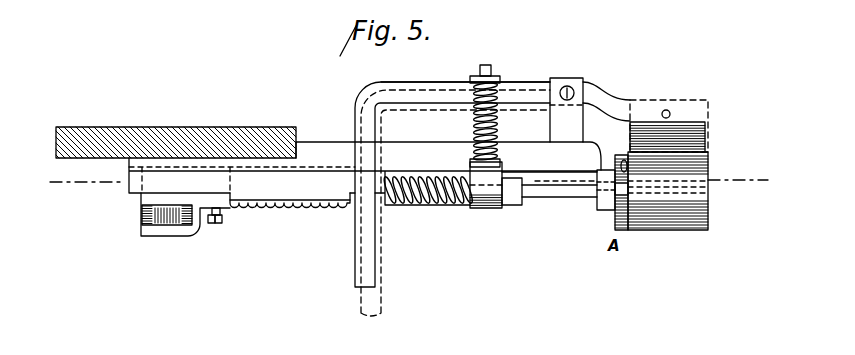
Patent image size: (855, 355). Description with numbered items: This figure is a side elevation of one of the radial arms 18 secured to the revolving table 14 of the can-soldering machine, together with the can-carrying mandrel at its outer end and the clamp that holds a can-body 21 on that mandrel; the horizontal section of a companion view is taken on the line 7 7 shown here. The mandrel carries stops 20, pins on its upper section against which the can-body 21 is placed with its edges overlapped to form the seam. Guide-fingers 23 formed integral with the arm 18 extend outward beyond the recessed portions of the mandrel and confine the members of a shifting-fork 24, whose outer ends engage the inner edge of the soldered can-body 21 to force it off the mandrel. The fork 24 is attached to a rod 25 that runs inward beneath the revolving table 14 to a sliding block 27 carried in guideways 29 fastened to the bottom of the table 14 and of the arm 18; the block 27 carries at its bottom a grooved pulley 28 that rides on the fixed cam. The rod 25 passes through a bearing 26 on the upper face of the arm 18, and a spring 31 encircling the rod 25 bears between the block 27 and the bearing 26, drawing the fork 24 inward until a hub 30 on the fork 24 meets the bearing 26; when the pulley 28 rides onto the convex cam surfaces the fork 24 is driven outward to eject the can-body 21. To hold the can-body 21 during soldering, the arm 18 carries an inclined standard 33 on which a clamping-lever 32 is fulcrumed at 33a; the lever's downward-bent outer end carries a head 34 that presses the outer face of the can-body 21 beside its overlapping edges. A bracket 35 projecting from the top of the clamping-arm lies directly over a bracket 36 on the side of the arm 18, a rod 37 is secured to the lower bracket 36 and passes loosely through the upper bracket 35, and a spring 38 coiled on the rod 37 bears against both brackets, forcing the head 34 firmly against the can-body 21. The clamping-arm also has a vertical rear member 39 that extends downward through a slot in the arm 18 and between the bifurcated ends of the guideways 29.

The section line 7 7 is at (407, 182).
The revolving table 14 is at (176, 134).
The arm 18 is at (428, 176).
The stops 20 is at (625, 158).
The can-body 21 is at (708, 206).
The guide-fingers 23 is at (606, 210).
The shifting-fork 24 is at (628, 188).
The rod 25 is at (548, 190).
The bearing 26 is at (502, 180).
The sliding block 27 is at (224, 199).
The pulley 28 is at (148, 213).
The guideways 29 is at (330, 171).
The hub 30 is at (517, 206).
The spring 31 is at (333, 210).
The clamping-lever 32 is at (519, 88).
The standard 33 is at (552, 118).
The fulcrum 33a is at (571, 90).
The head 34 is at (700, 134).
The bracket 35 is at (479, 77).
The bracket 36 is at (472, 162).
The rod 37 is at (489, 70).
The spring 38 is at (474, 126).
The vertical rear member 39 is at (368, 252).